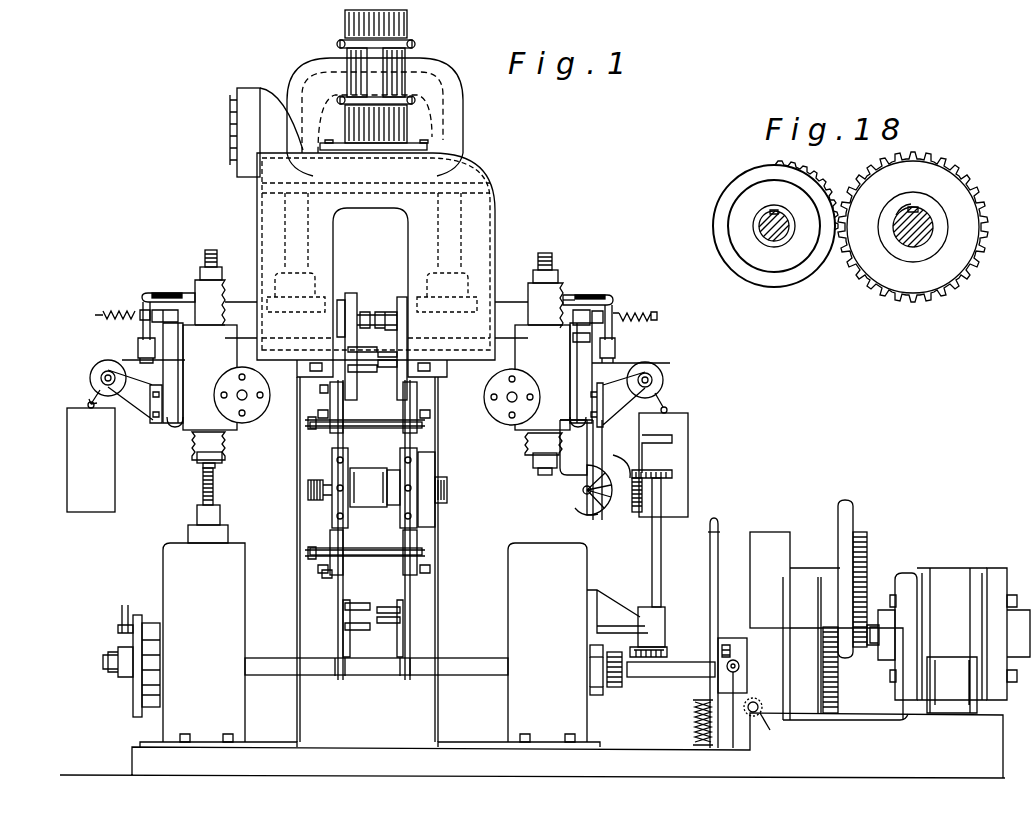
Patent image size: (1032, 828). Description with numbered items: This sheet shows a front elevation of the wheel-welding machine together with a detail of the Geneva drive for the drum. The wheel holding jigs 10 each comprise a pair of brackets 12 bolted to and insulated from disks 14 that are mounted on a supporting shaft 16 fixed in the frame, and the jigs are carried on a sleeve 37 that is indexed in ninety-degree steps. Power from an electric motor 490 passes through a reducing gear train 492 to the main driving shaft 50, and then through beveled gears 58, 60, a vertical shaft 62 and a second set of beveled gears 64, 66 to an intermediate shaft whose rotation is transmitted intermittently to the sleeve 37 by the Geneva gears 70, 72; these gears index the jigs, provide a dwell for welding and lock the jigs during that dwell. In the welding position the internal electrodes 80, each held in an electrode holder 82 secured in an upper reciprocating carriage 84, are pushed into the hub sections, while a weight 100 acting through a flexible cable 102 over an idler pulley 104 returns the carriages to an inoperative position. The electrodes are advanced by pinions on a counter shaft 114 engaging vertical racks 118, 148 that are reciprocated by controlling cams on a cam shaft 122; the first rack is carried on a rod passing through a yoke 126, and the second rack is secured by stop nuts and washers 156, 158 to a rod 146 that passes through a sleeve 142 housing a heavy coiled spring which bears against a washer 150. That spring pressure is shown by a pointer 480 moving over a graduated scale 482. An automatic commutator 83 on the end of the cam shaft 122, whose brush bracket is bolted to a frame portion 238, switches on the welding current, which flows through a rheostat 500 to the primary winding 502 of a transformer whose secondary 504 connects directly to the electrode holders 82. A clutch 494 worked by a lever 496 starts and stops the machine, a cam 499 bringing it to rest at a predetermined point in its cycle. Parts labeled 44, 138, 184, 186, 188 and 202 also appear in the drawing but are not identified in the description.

In FIG. 1, the wheel holding jig 10 is at (374, 530).
In FIG. 1, the bracket 12 is at (390, 395).
In FIG. 1, the disk 14 is at (325, 452).
In FIG. 18, the supporting shaft 16 is at (929, 225).
In FIG. 1, the sleeve 37 is at (311, 504).
In FIG. 18, the sleeve 37 is at (900, 204).
In FIG. 1, the tie rod 44 is at (318, 430).
In FIG. 1, the main driving shaft 50 is at (667, 678).
In FIG. 1, the beveled gear 58 is at (645, 690).
In FIG. 1, the beveled gear 60 is at (662, 651).
In FIG. 1, the vertical shaft 62 is at (652, 553).
In FIG. 1, the beveled gear 64 is at (679, 478).
In FIG. 1, the beveled gear 66 is at (649, 500).
In FIG. 18, the Geneva gear 70 is at (762, 290).
In FIG. 1, the Geneva gear 72 is at (436, 468).
In FIG. 18, the Geneva gear 72 is at (881, 277).
In FIG. 1, the internal electrode 80 is at (379, 309).
In FIG. 1, the electrode holder 82 is at (346, 296).
In FIG. 1, the automatic commutator 83 is at (116, 682).
In FIG. 1, the upper reciprocating carriage 84 is at (249, 294).
In FIG. 1, the weight 100 is at (67, 440).
In FIG. 1, the flexible cable 102 is at (90, 398).
In FIG. 1, the idler pulley 104 is at (100, 358).
In FIG. 1, the counter shaft 114 is at (239, 387).
In FIG. 1, the vertical rack 118 is at (209, 288).
In FIG. 1, the cam shaft 122 is at (460, 657).
In FIG. 1, the yoke 126 is at (201, 252).
In FIG. 1, the nut 138 is at (198, 267).
In FIG. 1, the sleeve 142 is at (524, 507).
In FIG. 1, the rod 146 is at (536, 255).
In FIG. 1, the vertical rack 148 is at (562, 302).
In FIG. 1, the washer 150 is at (221, 468).
In FIG. 1, the stop nut and washer 156 is at (525, 468).
In FIG. 1, the stop nut and washer 158 is at (566, 274).
In FIG. 1, the spring 184 is at (90, 318).
In FIG. 1, the arm 186 is at (127, 309).
In FIG. 1, the arm 188 is at (623, 309).
In FIG. 1, the block 202 is at (623, 336).
In FIG. 1, the frame portion 238 is at (168, 615).
In FIG. 1, the pointer 480 is at (597, 473).
In FIG. 1, the graduated scale 482 is at (597, 515).
In FIG. 1, the electric motor 490 is at (965, 569).
In FIG. 1, the reducing gear train 492 is at (814, 561).
In FIG. 1, the clutch 494 is at (753, 632).
In FIG. 1, the lever 496 is at (710, 570).
In FIG. 1, the cam 499 is at (766, 722).
In FIG. 1, the rheostat 500 is at (227, 125).
In FIG. 1, the primary winding 502 is at (434, 75).
In FIG. 1, the secondary 504 is at (288, 246).